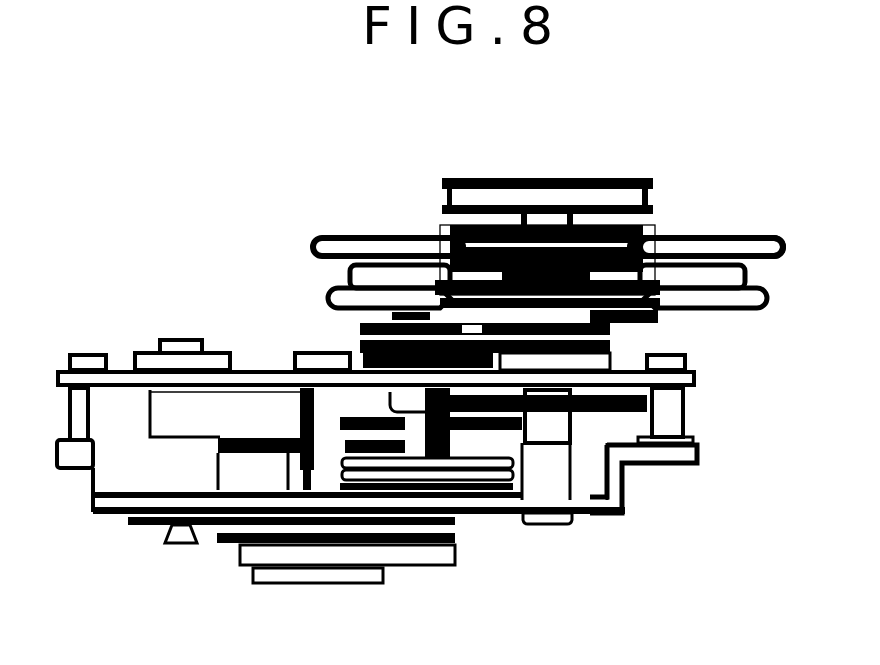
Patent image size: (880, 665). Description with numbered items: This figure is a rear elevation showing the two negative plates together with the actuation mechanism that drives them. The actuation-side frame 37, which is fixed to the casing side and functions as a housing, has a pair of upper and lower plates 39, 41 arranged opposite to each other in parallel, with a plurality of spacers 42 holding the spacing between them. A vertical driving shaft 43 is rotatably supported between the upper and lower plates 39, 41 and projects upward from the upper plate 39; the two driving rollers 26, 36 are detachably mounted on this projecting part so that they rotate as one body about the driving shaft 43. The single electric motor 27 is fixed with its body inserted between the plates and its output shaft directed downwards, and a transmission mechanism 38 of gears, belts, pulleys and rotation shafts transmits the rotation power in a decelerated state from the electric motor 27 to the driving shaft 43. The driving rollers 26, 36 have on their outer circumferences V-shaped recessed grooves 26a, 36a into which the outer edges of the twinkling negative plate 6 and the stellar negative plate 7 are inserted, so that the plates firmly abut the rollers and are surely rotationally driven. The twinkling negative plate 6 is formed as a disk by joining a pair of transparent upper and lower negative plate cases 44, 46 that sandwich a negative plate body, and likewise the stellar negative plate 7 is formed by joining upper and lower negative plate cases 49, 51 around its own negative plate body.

The stellar negative plate 7 is at (357, 227).
The driving shaft 43 is at (587, 208).
The driving roller 36 is at (493, 227).
The recessed groove 36a is at (667, 238).
The upper negative plate case 49 is at (328, 237).
The lower negative plate case 51 is at (770, 257).
The driving roller 26 is at (433, 262).
The recessed groove 26a is at (667, 303).
The lower negative plate case 46 is at (747, 310).
The twinkling negative plate 6 is at (323, 293).
The upper negative plate case 44 is at (747, 277).
The upper plate 39 is at (263, 370).
The electric motor 27 is at (155, 352).
The lower plate 41 is at (105, 513).
The transmission mechanism 38 is at (473, 502).
The spacer 42 is at (683, 417).
The actuation-side frame 37 is at (645, 473).